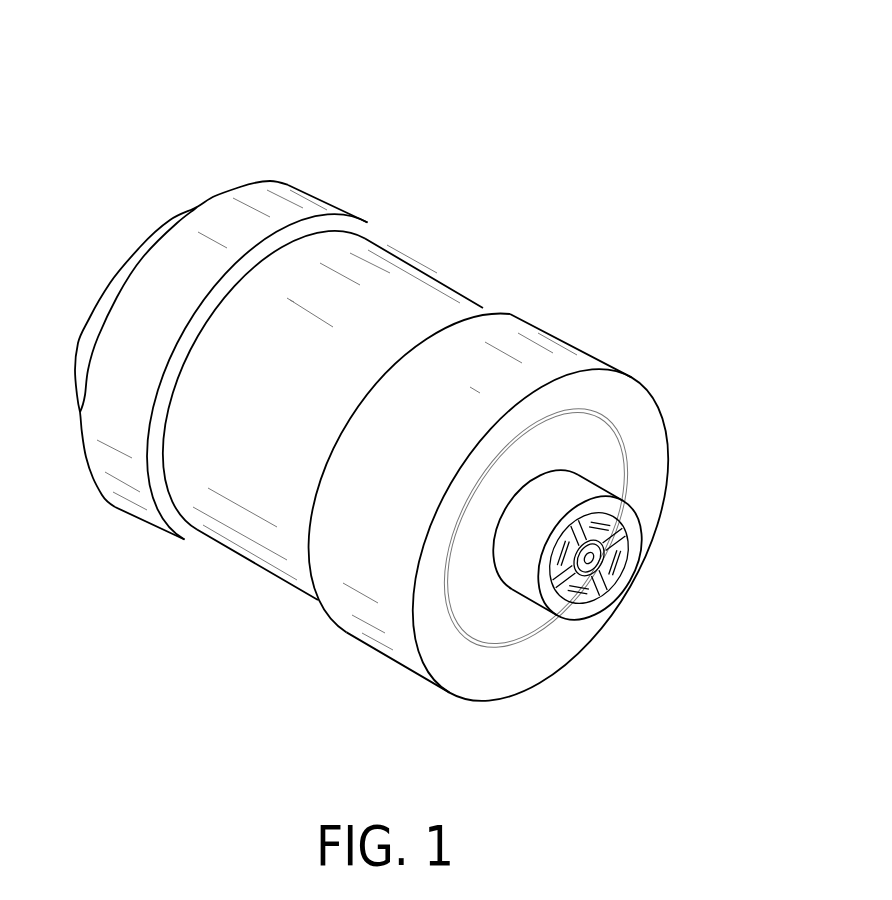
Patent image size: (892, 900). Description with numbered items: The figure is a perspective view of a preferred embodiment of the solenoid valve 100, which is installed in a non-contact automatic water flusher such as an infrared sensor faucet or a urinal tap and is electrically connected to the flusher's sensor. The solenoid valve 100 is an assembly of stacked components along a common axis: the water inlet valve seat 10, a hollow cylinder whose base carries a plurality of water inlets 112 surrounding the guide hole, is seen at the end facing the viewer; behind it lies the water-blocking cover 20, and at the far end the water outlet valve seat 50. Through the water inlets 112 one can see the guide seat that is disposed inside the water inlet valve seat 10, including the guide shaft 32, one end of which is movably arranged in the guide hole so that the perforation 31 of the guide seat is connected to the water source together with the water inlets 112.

The solenoid valve 100 is at (436, 259).
The water outlet valve seat 50 is at (322, 186).
The water-blocking cover 20 is at (581, 330).
The water inlet valve seat 10 is at (645, 571).
The water inlets 112 is at (597, 561).
The perforation 31 is at (592, 562).
The guide shaft 32 is at (603, 583).